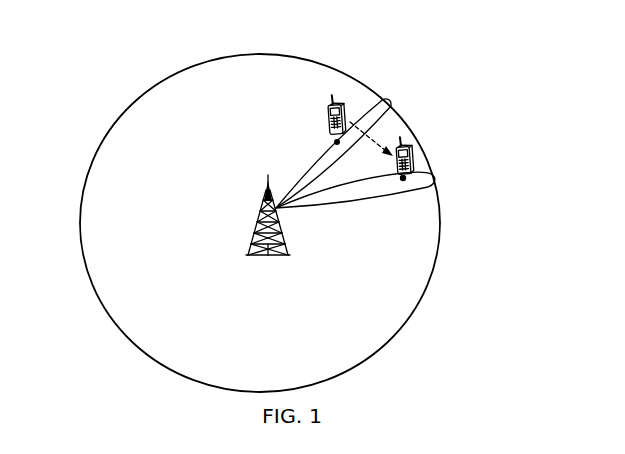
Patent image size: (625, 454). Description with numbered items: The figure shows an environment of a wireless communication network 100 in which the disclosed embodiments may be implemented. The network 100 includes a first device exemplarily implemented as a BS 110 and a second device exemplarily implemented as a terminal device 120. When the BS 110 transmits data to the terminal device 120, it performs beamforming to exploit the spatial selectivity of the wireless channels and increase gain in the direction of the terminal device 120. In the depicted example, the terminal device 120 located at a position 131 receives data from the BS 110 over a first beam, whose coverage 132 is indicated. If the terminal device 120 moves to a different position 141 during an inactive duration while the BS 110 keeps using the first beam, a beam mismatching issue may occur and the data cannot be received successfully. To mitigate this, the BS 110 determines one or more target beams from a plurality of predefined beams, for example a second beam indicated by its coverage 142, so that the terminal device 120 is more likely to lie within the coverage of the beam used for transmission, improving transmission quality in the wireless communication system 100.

The wireless communication network 100 is at (180, 41).
The base station 110 is at (258, 234).
The terminal device 120 is at (328, 114).
The position 131 is at (336, 146).
The coverage of first beam 132 is at (388, 108).
The different position 141 is at (409, 180).
The coverage of second beam 142 is at (352, 201).